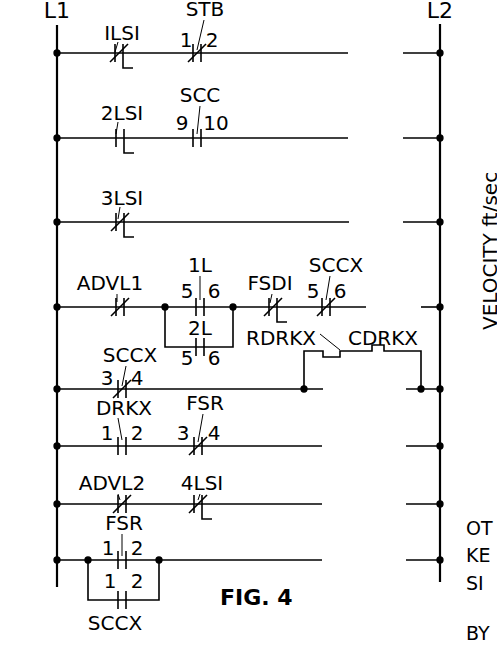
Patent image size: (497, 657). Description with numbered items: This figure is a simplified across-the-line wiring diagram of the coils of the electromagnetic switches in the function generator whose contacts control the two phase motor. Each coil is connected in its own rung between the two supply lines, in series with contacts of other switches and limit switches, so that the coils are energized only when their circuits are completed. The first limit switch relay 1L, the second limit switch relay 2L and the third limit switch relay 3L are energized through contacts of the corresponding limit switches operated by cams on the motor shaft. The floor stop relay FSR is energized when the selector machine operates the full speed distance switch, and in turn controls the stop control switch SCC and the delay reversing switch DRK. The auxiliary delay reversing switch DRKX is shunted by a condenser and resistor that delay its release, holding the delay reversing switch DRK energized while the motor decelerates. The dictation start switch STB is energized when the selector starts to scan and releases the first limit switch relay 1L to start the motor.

The first limit switch relay 1L is at (375, 53).
The second limit switch relay 2L is at (375, 138).
The third limit switch relay 3L is at (376, 222).
The floor stop relay FSR is at (393, 306).
The auxiliary delay reversing switch DRKX is at (364, 388).
The delay reversing switch DRK is at (364, 446).
The dictation start switch STB is at (364, 503).
The stop control switch SCC is at (364, 560).